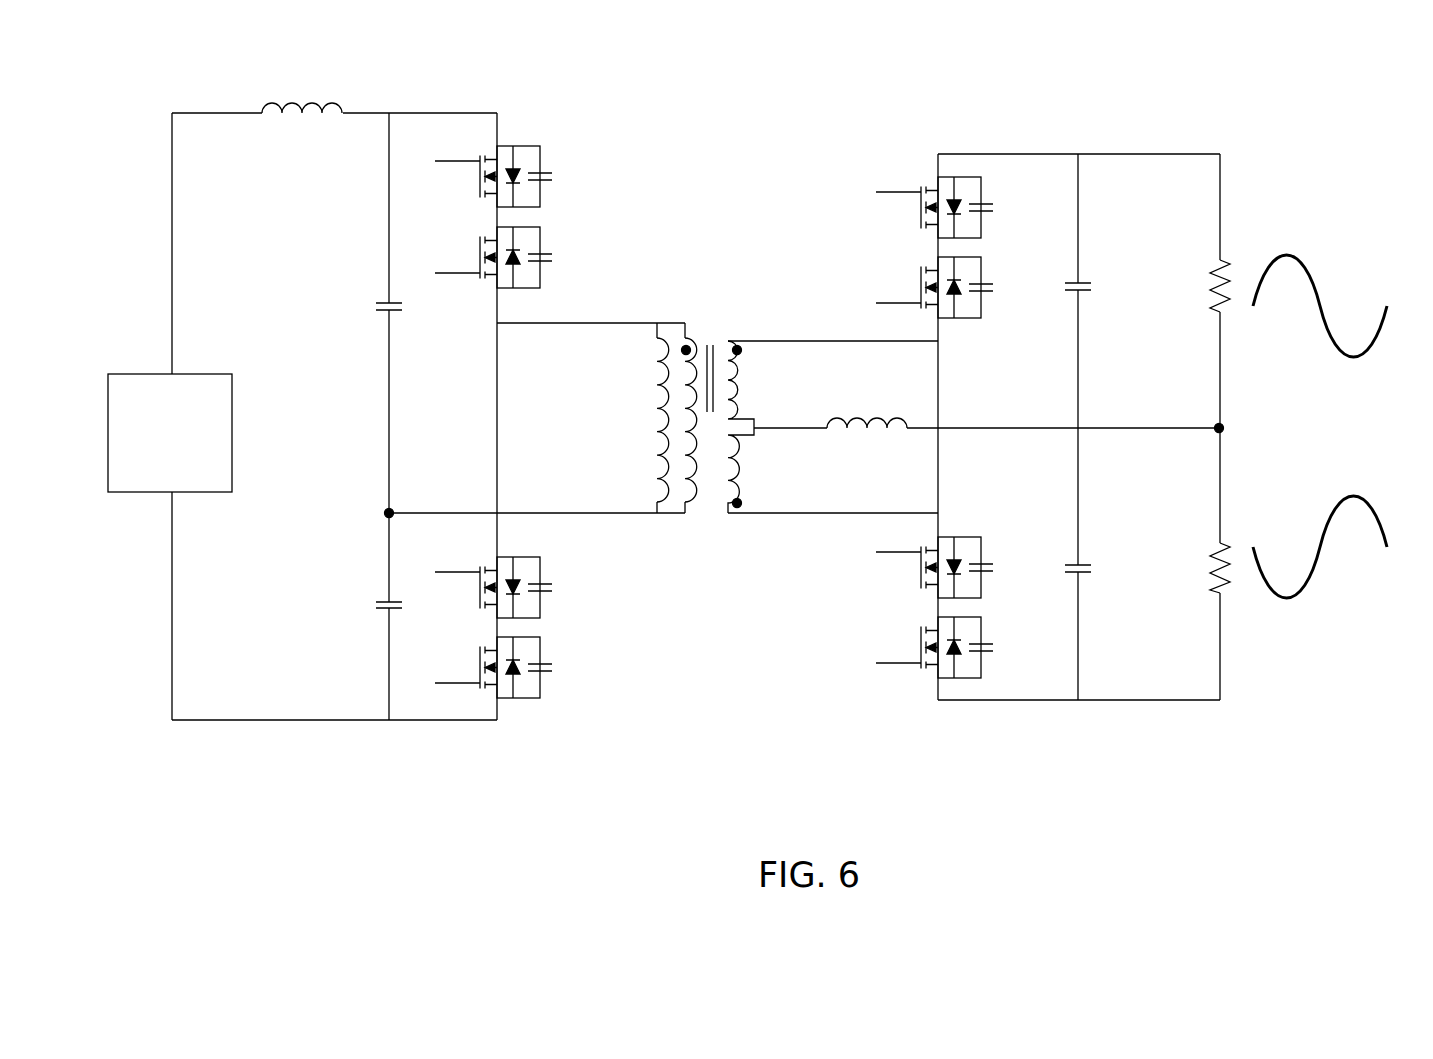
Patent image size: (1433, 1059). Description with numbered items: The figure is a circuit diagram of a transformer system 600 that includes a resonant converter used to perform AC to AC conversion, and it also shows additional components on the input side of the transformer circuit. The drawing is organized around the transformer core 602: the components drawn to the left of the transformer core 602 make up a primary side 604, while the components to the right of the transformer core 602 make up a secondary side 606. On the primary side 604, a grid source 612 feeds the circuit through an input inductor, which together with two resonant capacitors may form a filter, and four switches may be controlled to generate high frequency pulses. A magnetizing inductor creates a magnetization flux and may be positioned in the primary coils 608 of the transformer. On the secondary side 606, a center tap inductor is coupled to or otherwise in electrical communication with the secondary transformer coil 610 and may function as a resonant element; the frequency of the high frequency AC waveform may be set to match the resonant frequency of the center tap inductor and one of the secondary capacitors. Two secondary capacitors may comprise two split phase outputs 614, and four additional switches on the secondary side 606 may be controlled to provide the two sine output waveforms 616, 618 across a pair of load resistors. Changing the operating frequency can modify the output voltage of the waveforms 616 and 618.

The transformer system 600 is at (1178, 102).
The transformer core 602 is at (708, 337).
The primary side 604 is at (514, 207).
The secondary side 606 is at (926, 237).
The primary coils 608 is at (678, 518).
The secondary transformer coil 610 is at (732, 518).
The grid 612 is at (147, 373).
The split phase outputs 614 is at (1050, 233).
The sine output waveform 616 is at (1318, 257).
The sine output waveform 618 is at (1343, 533).